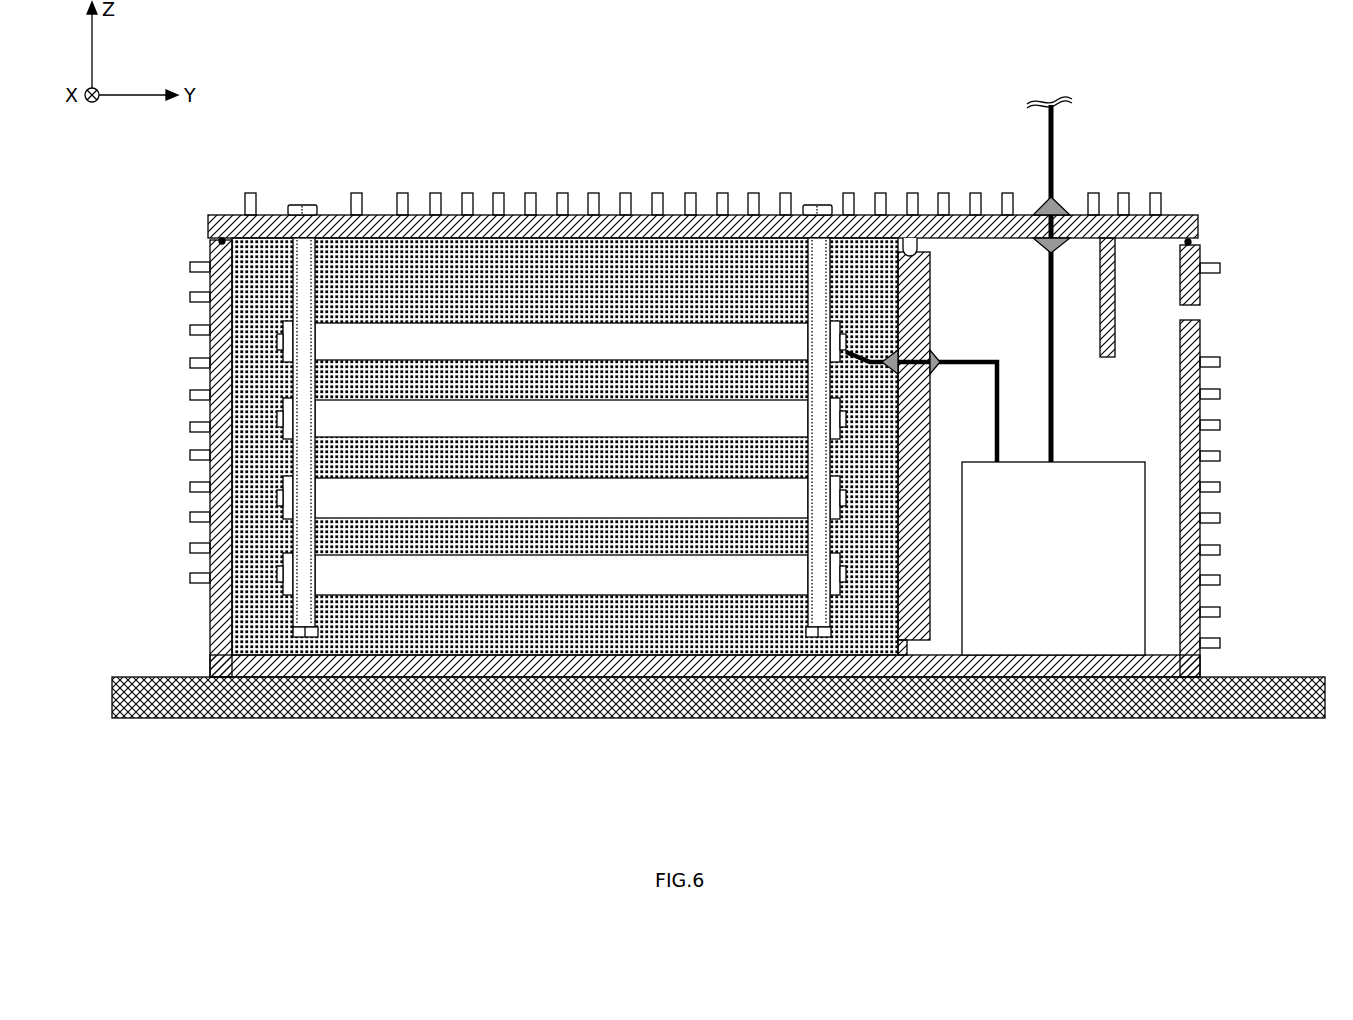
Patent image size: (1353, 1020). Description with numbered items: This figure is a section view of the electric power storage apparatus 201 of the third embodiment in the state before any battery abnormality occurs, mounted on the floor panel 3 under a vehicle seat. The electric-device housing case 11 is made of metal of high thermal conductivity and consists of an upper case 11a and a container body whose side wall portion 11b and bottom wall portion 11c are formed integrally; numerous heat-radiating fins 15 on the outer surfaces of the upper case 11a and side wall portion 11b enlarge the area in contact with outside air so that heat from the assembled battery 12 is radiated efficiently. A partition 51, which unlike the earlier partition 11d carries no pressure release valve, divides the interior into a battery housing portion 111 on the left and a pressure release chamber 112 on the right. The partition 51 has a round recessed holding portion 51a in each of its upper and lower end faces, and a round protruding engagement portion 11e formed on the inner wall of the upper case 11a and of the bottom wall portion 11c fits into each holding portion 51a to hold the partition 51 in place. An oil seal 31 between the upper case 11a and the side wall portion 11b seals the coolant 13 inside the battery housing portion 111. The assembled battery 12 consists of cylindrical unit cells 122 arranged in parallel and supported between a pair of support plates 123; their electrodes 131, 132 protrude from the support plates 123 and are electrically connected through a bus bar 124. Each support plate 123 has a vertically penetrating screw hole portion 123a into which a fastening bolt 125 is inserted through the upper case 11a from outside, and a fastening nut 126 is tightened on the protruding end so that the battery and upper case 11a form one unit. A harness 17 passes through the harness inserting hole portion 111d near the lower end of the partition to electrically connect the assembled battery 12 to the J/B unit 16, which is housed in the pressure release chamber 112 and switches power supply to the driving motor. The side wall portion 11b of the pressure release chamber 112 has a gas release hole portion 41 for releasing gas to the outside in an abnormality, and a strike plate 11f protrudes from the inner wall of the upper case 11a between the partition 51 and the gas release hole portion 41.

The electric power storage apparatus 201 is at (718, 429).
The electric-device housing case 11 is at (748, 466).
The upper case 11a is at (1188, 240).
The side wall portion 11b is at (1188, 495).
The bottom wall portion 11c is at (1138, 663).
The partition 11d is at (1193, 660).
The engagement portion 11e is at (915, 247).
The strike plate 11f is at (1108, 247).
The assembled battery 12 is at (485, 453).
The coolant 13 is at (637, 272).
The heat-radiating fins 15 is at (1223, 578).
The J/B unit 16 is at (1122, 622).
The harness 17 is at (997, 362).
The oil seal 31 is at (222, 241).
The gas release hole portion 41 is at (1200, 308).
The partition 51 is at (928, 456).
The holding portion 51a is at (920, 640).
The battery housing portion 111 is at (676, 236).
The harness inserting hole portion 111d is at (927, 343).
The pressure release chamber 112 is at (1000, 213).
The cylindrical unit cells 122 is at (683, 572).
The support plates 123 is at (561, 443).
The screw hole portion 123a is at (312, 278).
The bus bar 124 is at (288, 485).
The fastening bolt 125 is at (303, 205).
The fastening nut 126 is at (307, 637).
The electrode 131 is at (277, 573).
The electrode 132 is at (848, 577).
The floor panel 3 is at (1292, 687).